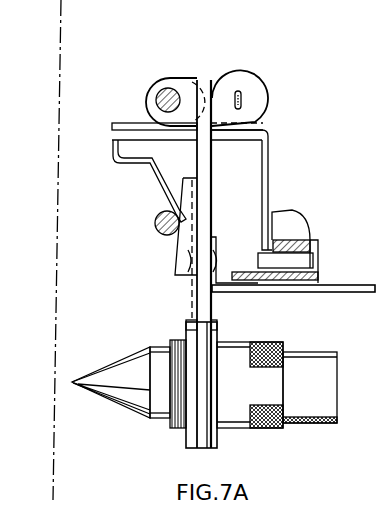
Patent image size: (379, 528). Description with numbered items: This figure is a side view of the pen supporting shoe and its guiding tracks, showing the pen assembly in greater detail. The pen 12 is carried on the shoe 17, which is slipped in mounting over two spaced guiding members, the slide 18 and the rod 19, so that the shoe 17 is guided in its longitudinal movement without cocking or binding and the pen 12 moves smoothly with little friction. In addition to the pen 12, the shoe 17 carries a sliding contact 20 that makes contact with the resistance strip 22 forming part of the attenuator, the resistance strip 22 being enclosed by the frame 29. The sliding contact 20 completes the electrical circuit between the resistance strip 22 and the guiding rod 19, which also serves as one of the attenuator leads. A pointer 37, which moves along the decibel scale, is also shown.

The pen 12 is at (154, 422).
The shoe 17 is at (207, 449).
The slide 18 is at (166, 90).
The rod 19 is at (160, 212).
The sliding contact 20 is at (268, 190).
The resistance strip 22 is at (270, 258).
The frame 29 is at (318, 268).
The pointer 37 is at (338, 293).